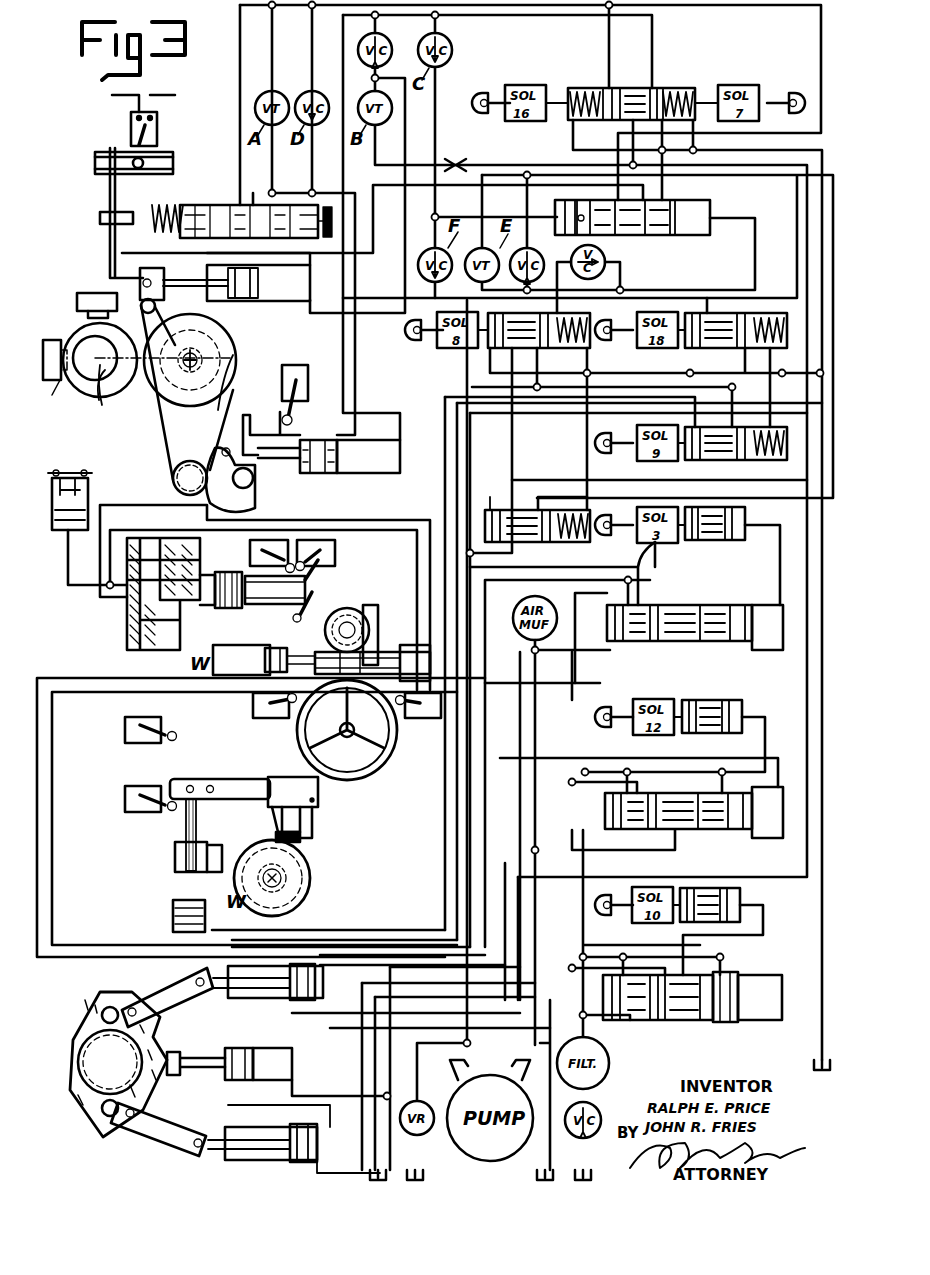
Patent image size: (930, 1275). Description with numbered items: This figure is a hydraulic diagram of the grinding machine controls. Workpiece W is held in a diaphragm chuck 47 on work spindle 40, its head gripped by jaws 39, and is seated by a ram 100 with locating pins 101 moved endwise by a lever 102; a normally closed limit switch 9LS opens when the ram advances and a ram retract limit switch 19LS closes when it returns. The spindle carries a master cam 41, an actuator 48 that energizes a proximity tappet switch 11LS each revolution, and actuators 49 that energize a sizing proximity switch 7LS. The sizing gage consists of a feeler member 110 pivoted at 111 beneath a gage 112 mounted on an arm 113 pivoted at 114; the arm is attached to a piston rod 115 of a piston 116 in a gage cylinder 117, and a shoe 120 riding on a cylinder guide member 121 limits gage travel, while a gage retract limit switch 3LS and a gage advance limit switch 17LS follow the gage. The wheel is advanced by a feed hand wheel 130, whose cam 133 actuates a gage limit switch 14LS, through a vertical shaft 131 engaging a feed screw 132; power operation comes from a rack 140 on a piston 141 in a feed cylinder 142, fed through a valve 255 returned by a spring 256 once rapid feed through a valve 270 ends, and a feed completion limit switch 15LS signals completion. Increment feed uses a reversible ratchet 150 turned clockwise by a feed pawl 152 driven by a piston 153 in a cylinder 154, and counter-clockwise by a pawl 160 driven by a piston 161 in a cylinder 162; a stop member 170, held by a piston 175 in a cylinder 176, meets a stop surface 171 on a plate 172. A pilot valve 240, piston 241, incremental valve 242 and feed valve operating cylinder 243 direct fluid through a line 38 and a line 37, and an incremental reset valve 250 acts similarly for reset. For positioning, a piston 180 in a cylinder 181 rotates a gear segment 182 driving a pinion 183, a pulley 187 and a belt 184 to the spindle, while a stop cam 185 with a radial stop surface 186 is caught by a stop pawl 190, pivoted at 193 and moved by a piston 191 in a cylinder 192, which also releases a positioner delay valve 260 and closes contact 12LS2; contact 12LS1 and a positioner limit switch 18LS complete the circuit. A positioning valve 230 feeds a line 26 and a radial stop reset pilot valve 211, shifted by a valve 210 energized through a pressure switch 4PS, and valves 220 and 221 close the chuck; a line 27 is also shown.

The radial stop limit switch contact 12LS1 is at (131, 118).
The radial stop limit switch contact 12LS2 is at (157, 118).
The positioner delay valve 260 is at (190, 205).
The proximity tappet switch 11LS is at (77, 298).
The pivot 193 is at (158, 296).
The stop pawl 190 is at (140, 308).
The piston 191 is at (242, 301).
The cylinder 192 is at (292, 300).
The actuator 48 is at (80, 333).
The work spindle 40 is at (108, 378).
The stop cam 185 is at (205, 355).
The positioner limit switch 18LS is at (282, 390).
The sizing proximity switch 7LS is at (54, 398).
The actuators 49 is at (98, 400).
The radial stop surface 186 is at (162, 385).
The belt 184 is at (157, 425).
The pinion 183 is at (172, 475).
The pulley 187 is at (177, 488).
The gear segment 182 is at (252, 500).
The piston 180 is at (318, 475).
The cylinder 181 is at (372, 462).
The conduit 27 is at (372, 413).
The pressure switch 4PS is at (69, 490).
The diaphragm chuck 47 is at (127, 628).
The jaws 39 is at (200, 613).
The locating pins 101 is at (226, 610).
The ram 100 is at (272, 604).
The lever 102 is at (310, 602).
The limit switch 9LS is at (250, 558).
The ram retract limit switch 19LS is at (337, 564).
The vertical shaft 131 is at (360, 610).
The feed screw 132 is at (378, 612).
The rack 140 is at (383, 655).
The feed cylinder 142 is at (238, 668).
The piston 141 is at (276, 670).
The feed hand wheel 130 is at (383, 765).
The cam 133 is at (349, 718).
The feed completion limit switch 15LS is at (265, 718).
The gage limit switch 14LS is at (420, 718).
The gage advance limit switch 17LS is at (125, 722).
The gage retract limit switch 3LS is at (125, 790).
The arm 113 is at (238, 779).
The pivot 114 is at (208, 785).
The gage 112 is at (318, 790).
The pivot 111 is at (318, 803).
The shoe 120 is at (272, 812).
The feeler member 110 is at (312, 830).
The piston rod 115 is at (196, 830).
The gage cylinder 117 is at (175, 850).
The piston 116 is at (173, 918).
The cylinder guide member 121 is at (306, 860).
The master cam 41 is at (300, 872).
The reversible ratchet 150 is at (88, 1055).
The pawl 160 is at (97, 1030).
The feed pawl 152 is at (102, 1093).
The stop surface 171 is at (163, 1035).
The plate 172 is at (163, 1088).
The stop member 170 is at (180, 1060).
The piston 175 is at (235, 1053).
The cylinder 176 is at (292, 1063).
The cylinder 162 is at (266, 998).
The piston 161 is at (315, 975).
The piston 153 is at (298, 1125).
The cylinder 154 is at (262, 1160).
The line 37 is at (390, 1028).
The line 26 is at (609, 42).
The positioning valve 230 is at (655, 90).
The radial stop reset pilot valve 211 is at (665, 235).
The valve 270 is at (548, 348).
The valve 210 is at (735, 348).
The valve 255 is at (505, 510).
The spring 256 is at (578, 542).
The valve 220 is at (706, 540).
The valve 221 is at (710, 607).
The incremental reset valve 250 is at (705, 829).
The solenoid operated pilot valve 240 is at (715, 898).
The line 38 is at (690, 946).
The incremental valve 242 is at (700, 1020).
The piston 241 is at (735, 1022).
The feed valve operating cylinder 243 is at (768, 1020).